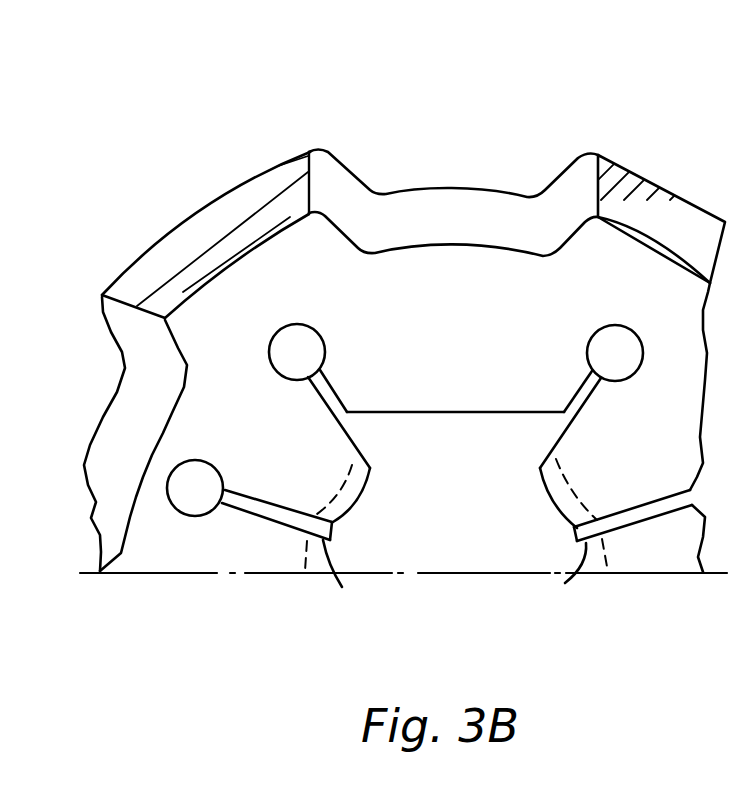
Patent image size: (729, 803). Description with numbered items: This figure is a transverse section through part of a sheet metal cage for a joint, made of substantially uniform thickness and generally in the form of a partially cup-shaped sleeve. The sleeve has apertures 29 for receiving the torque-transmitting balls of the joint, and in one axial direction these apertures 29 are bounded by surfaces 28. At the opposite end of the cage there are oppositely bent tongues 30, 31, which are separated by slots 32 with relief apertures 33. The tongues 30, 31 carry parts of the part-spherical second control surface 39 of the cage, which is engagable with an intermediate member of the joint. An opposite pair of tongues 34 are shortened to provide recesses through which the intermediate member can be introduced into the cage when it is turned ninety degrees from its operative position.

The surfaces 28 is at (410, 203).
The apertures 29 is at (524, 170).
The tongue 30 is at (273, 464).
The tongue 31 is at (222, 550).
The slots 32 is at (638, 516).
The relief apertures 33 is at (200, 470).
The tongues 34 is at (460, 398).
The second control surface 39 is at (350, 497).